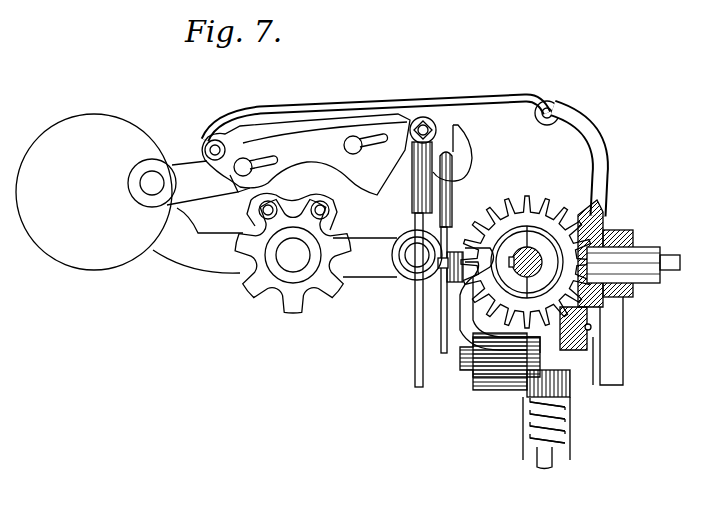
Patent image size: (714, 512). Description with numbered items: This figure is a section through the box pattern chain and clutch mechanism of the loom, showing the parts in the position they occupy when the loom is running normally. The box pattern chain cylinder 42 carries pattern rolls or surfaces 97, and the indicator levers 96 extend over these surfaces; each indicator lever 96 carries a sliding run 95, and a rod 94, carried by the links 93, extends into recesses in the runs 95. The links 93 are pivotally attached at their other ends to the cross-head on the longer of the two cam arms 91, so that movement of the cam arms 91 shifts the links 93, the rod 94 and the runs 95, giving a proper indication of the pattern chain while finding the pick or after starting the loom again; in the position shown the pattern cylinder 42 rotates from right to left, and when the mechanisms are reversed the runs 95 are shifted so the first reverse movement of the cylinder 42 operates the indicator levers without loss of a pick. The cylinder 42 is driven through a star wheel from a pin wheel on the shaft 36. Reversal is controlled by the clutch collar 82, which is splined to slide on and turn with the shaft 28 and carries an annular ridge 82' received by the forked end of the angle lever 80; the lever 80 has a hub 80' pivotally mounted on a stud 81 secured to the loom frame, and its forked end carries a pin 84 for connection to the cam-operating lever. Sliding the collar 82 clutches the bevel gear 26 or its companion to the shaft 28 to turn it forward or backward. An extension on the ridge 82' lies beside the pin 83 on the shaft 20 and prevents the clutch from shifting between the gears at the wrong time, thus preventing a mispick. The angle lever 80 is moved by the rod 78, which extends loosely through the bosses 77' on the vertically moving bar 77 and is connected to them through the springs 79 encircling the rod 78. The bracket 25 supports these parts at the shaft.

The shaft 20 is at (628, 262).
The bearing bracket 25 is at (605, 222).
The bevel gear 26 is at (512, 210).
The shaft 28 is at (518, 252).
The shaft 36 is at (412, 262).
The box pattern chain cylinder 42 is at (250, 280).
The vertically moving bar 77 is at (521, 434).
The bosses 77' is at (521, 394).
The rod 78 is at (538, 462).
The springs 79 is at (532, 416).
The angle lever 80 is at (616, 355).
The hub 80' is at (478, 371).
The stud 81 is at (462, 362).
The clutch collar 82 is at (489, 199).
The annular ridge 82' is at (493, 300).
The pin 83 is at (630, 245).
The pin 84 is at (430, 275).
The cam arms 91 is at (601, 172).
The links 93 is at (410, 104).
The rod 94 is at (212, 143).
The sliding runs 95 is at (305, 150).
The indicator levers 96 is at (183, 168).
The pattern rolls or surfaces 97 is at (258, 206).